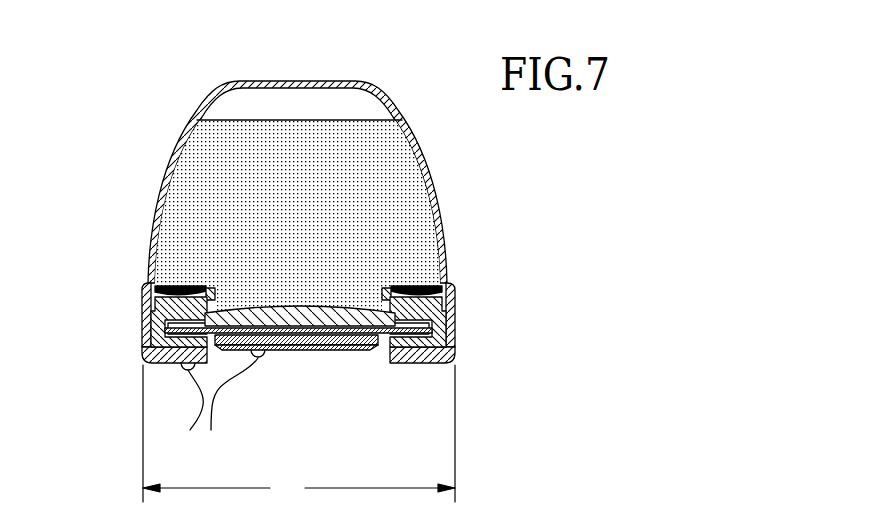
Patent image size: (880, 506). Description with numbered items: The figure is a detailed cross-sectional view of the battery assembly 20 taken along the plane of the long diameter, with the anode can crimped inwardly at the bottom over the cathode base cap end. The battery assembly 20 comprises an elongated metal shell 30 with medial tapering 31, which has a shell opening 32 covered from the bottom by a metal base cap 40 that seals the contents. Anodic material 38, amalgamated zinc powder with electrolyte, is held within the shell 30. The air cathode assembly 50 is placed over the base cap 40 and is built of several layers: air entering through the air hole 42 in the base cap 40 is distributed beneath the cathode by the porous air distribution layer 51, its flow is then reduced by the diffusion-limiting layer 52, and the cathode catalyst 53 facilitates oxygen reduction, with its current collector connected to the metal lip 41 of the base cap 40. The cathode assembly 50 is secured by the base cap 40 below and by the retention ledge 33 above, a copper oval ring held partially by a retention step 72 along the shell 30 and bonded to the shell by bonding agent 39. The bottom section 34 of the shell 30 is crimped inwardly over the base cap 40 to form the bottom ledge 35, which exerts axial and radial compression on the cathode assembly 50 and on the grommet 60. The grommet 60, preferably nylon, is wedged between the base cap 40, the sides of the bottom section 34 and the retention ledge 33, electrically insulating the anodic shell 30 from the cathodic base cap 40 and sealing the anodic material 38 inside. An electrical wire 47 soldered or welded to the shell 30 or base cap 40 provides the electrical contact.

The battery assembly 20 is at (112, 170).
The metal shell 30 is at (153, 238).
The medial tapering 31 is at (340, 81).
The shell opening 32 is at (360, 355).
The retention ledge 33 is at (410, 285).
The bottom section 34 is at (478, 283).
The bottom ledge 35 is at (167, 364).
The anodic material 38 is at (197, 165).
The bonding agent 39 is at (430, 272).
The metal base cap 40 is at (325, 352).
The metal lip 41 is at (152, 322).
The air hole 42 is at (297, 349).
The electrical wire 47 is at (228, 437).
The air cathode assembly 50 is at (320, 230).
The air distribution layer 51 is at (268, 307).
The diffusion-limiting layer 52 is at (240, 308).
The cathode catalyst 53 is at (305, 308).
The grommet 60 is at (166, 318).
The retention step 72 is at (162, 295).